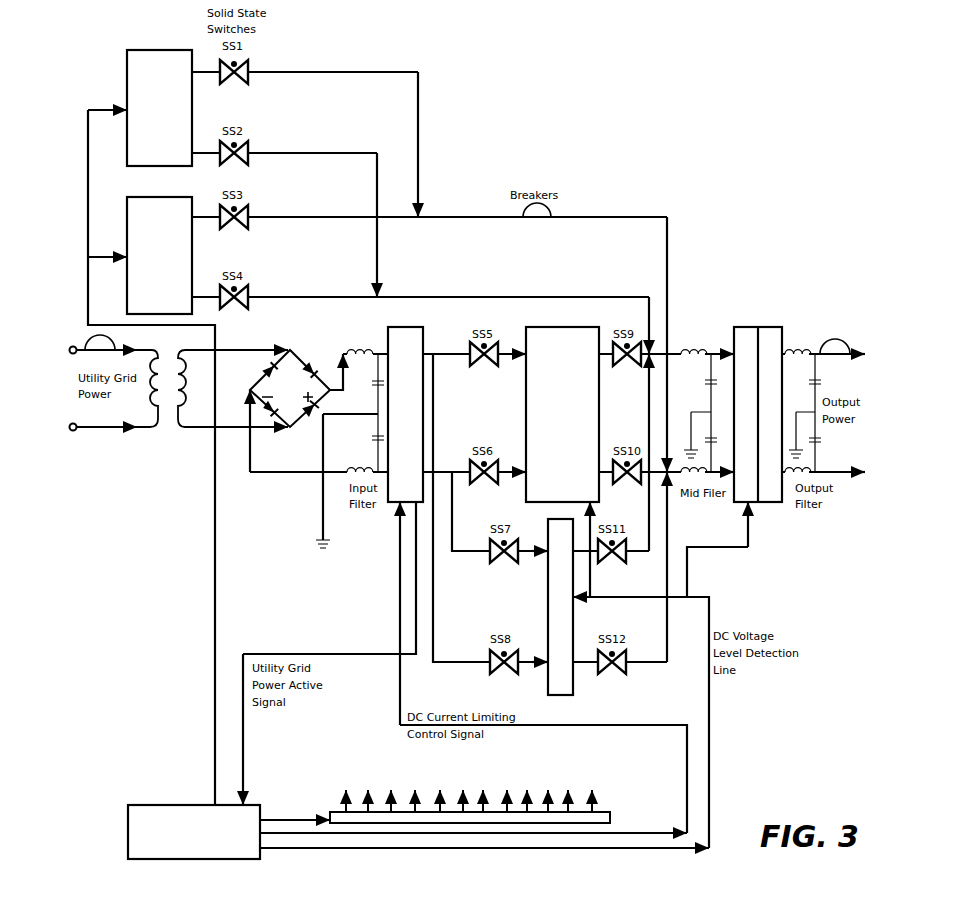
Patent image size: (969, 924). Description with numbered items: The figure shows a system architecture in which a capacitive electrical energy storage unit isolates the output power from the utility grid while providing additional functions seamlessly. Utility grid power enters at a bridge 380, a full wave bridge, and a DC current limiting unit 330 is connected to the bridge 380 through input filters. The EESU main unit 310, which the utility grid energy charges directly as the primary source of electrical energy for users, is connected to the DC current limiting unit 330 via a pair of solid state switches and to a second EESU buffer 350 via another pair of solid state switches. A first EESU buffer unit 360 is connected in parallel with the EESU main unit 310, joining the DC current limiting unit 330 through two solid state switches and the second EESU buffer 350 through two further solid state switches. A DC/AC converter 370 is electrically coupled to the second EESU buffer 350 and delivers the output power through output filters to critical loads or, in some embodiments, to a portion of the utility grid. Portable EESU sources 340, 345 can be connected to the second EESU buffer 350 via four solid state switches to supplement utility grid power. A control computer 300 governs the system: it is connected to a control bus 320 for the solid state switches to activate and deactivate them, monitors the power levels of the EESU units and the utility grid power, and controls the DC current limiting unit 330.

The control computer 300 is at (157, 805).
The EESU main unit 310 is at (557, 325).
The control bus 320 is at (610, 812).
The DC current limiting unit 330 is at (410, 325).
The portable EESU source 340 is at (127, 82).
The portable EESU source 345 is at (127, 237).
The EESU buffer 2 350 is at (743, 325).
The EESU buffer unit 1 360 is at (548, 610).
The DC/AC converter 370 is at (767, 502).
The bridge 380 is at (292, 432).